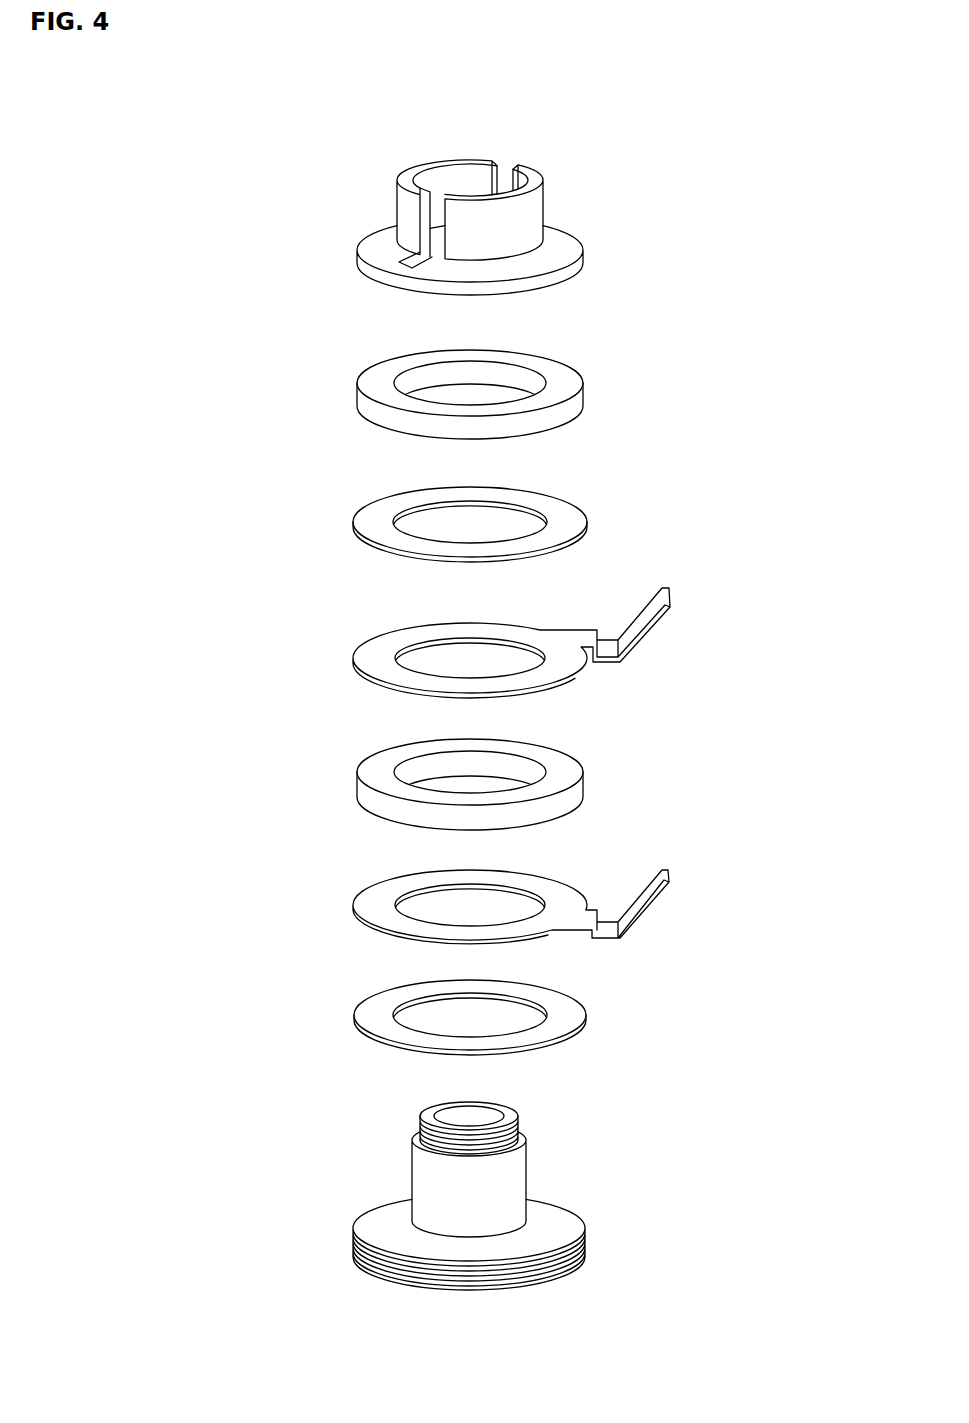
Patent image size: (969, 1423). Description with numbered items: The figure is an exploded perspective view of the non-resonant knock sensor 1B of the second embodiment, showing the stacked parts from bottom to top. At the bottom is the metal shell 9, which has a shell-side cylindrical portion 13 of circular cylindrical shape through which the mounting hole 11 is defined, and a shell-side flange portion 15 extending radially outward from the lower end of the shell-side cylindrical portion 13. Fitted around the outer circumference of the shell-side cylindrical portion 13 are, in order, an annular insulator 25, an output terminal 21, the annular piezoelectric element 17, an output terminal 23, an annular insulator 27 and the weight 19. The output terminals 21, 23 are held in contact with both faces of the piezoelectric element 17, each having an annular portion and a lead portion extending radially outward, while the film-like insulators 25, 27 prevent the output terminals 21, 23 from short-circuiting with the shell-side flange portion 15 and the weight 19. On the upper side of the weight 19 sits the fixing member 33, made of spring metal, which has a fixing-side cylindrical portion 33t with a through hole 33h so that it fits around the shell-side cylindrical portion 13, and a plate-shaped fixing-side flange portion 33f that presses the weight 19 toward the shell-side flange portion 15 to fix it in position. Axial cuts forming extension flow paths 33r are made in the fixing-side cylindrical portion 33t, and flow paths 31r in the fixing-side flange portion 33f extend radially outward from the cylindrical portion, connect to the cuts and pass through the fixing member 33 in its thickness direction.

The non-resonant knock sensor 1B is at (242, 241).
The fixing member 33 is at (658, 202).
The through hole 33h is at (457, 176).
The extension flow path 33r is at (418, 217).
The fixing-side cylindrical portion 33t is at (535, 200).
The fixing-side flange portion 33f is at (570, 243).
The flow path 31r is at (427, 263).
The weight 19 is at (576, 398).
The annular insulator 27 is at (588, 527).
The output terminal 23 is at (573, 674).
The piezoelectric element 17 is at (578, 786).
The output terminal 21 is at (573, 883).
The annular insulator 25 is at (587, 1016).
The metal shell 9 is at (378, 1171).
The mounting hole 11 is at (493, 1113).
The shell-side cylindrical portion 13 is at (513, 1207).
The shell-side flange portion 15 is at (587, 1243).